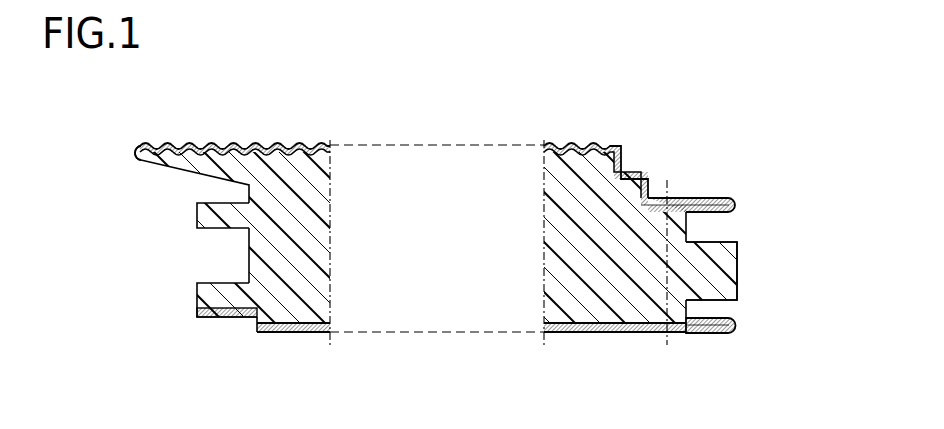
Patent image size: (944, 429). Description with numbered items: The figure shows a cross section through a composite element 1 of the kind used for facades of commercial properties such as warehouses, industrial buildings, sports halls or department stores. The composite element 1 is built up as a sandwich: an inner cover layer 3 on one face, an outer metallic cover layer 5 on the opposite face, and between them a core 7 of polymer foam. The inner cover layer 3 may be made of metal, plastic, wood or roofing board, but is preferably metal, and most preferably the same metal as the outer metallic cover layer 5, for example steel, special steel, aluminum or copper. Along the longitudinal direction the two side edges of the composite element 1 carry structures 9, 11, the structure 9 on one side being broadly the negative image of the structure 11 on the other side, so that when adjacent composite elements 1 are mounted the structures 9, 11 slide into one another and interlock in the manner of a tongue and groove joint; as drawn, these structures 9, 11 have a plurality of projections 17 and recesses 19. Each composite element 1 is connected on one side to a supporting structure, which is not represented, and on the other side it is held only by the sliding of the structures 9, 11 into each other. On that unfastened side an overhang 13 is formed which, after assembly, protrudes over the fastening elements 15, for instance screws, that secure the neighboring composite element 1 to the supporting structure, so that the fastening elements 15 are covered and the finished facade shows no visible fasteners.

The composite element 1 is at (571, 178).
The inner cover layer 3 is at (288, 333).
The outer metallic cover layer 5 is at (262, 146).
The core 7 is at (405, 300).
The structure 9 is at (248, 254).
The structure 11 is at (740, 256).
The overhang 13 is at (143, 150).
The fastening elements 15 is at (673, 192).
The projections 17 is at (197, 222).
The recesses 19 is at (247, 271).